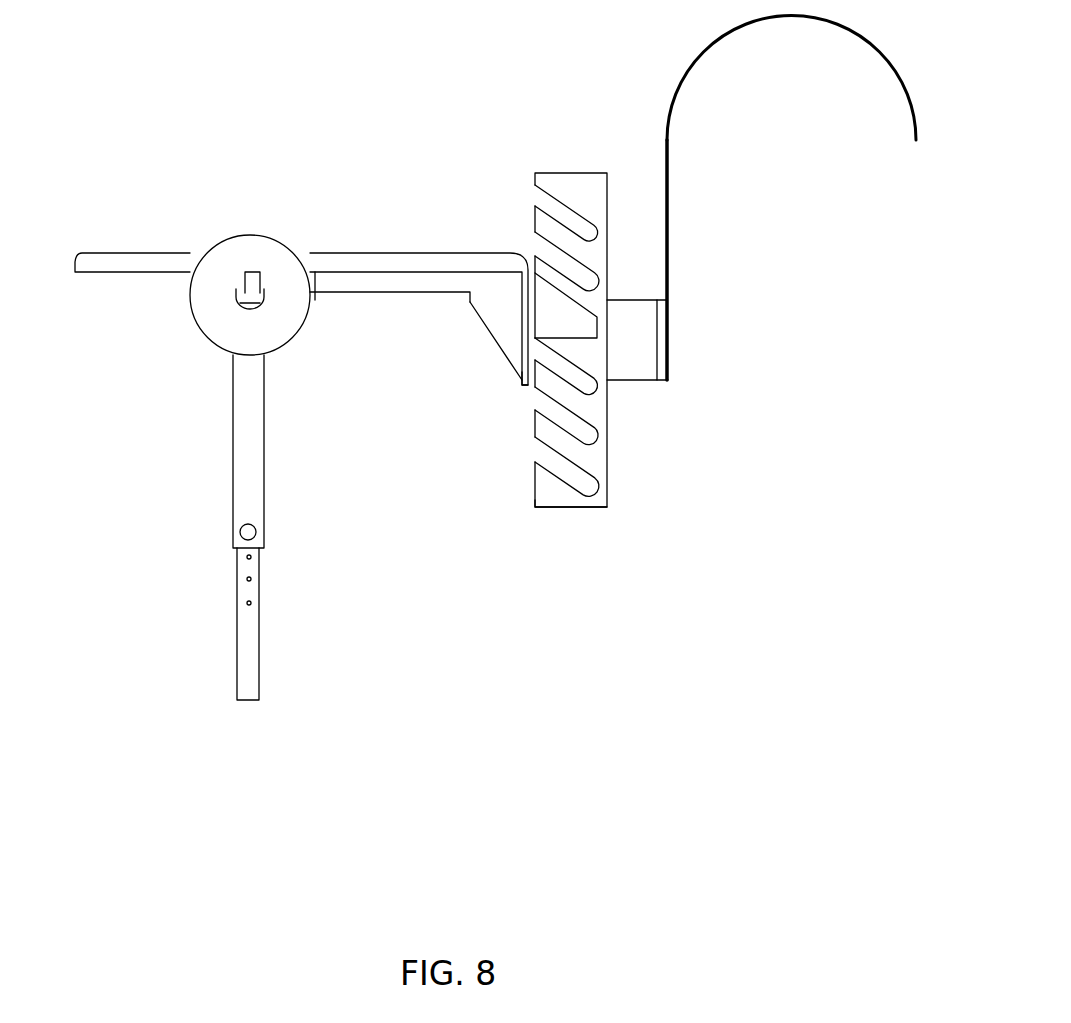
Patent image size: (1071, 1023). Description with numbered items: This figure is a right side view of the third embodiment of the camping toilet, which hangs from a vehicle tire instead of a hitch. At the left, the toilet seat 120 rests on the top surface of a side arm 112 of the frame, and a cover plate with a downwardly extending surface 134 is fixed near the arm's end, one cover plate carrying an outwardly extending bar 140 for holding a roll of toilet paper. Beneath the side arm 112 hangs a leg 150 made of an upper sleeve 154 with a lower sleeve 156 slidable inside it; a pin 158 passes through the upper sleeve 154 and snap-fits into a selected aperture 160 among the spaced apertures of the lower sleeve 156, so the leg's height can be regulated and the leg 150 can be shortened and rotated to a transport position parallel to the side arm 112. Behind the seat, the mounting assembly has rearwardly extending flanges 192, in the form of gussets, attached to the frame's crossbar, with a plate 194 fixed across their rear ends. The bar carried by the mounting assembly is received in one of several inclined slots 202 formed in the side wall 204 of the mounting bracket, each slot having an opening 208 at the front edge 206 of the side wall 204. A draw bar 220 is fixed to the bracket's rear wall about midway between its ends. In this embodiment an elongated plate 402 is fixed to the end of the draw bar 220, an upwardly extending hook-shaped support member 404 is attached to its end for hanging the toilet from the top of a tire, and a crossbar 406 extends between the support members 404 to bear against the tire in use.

The side arm 112 is at (355, 290).
The toilet seat 120 is at (115, 256).
The downwardly extending surface 134 is at (263, 300).
The outwardly extending bar 140 is at (243, 275).
The leg 150 is at (190, 519).
The upper sleeve 154 is at (255, 485).
The lower sleeve 156 is at (256, 686).
The pin 158 is at (257, 533).
The aperture 160 is at (250, 603).
The flange 192 is at (499, 330).
The plate 194 is at (522, 380).
The inclined slot 202 is at (590, 475).
The side wall 204 is at (542, 502).
The front edge 206 is at (533, 215).
The opening 208 is at (537, 451).
The draw bar 220 is at (637, 375).
The elongated plate 402 is at (662, 340).
The hook-shaped support member 404 is at (672, 240).
The crossbar 406 is at (665, 153).